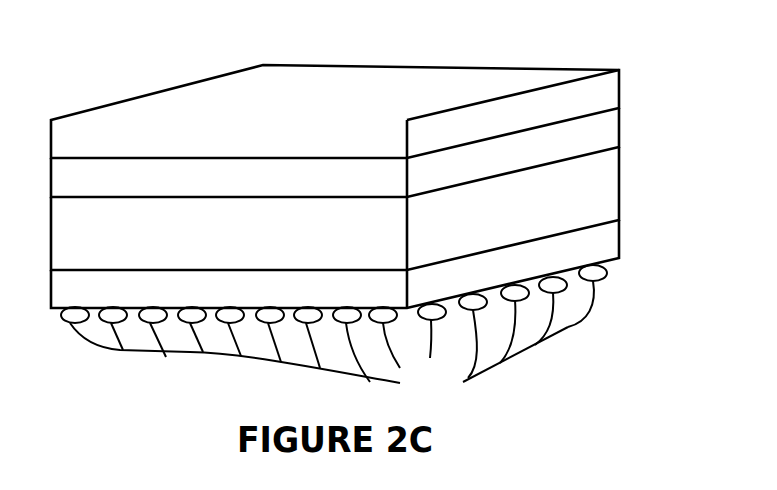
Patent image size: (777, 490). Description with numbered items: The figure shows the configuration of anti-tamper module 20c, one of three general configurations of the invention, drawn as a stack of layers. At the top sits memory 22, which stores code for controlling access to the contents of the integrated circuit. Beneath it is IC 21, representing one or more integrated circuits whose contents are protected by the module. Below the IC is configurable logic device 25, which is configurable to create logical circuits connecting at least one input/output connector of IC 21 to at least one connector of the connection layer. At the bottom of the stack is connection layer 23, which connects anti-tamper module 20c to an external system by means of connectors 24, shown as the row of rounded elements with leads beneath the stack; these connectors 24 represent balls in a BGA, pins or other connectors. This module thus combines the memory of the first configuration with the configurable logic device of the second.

The anti-tamper module 20c is at (619, 26).
The memory 22 is at (608, 95).
The integrated circuit (IC) 21 is at (598, 133).
The configurable logic device 25 is at (608, 192).
The connection layer 23 is at (593, 242).
The connectors 24 is at (334, 331).